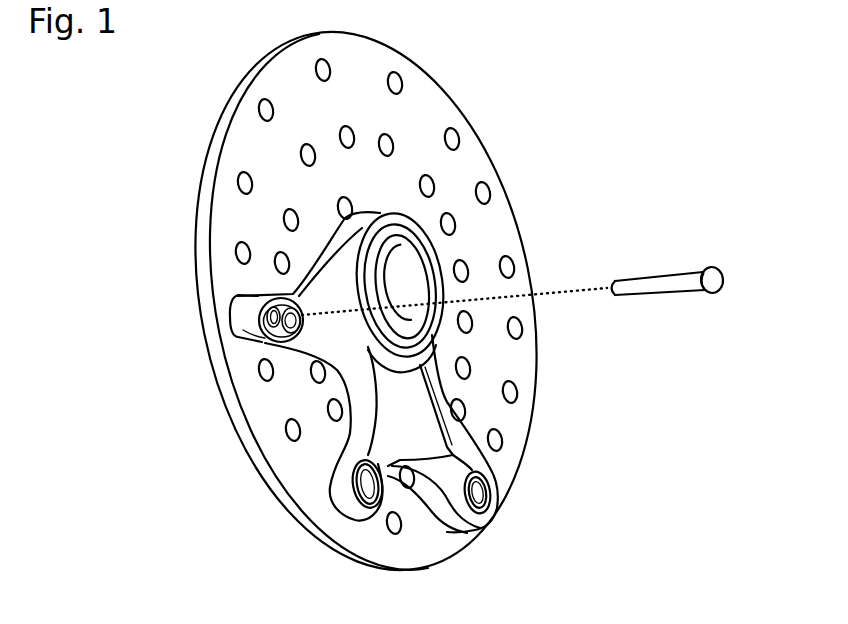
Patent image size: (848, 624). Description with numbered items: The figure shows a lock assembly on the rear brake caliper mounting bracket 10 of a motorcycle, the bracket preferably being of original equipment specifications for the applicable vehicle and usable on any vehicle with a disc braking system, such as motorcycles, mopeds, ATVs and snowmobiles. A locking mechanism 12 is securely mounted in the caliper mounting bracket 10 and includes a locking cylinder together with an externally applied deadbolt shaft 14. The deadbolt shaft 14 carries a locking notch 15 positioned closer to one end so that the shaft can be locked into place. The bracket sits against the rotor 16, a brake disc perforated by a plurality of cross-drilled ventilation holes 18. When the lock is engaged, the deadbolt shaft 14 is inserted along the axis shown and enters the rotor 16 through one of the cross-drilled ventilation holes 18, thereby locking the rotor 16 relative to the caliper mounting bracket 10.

The caliper mounting bracket 10 is at (394, 440).
The locking mechanism 12 is at (278, 332).
The deadbolt shaft 14 is at (657, 287).
The locking notch 15 is at (698, 275).
The rotor 16 is at (366, 114).
The cross-drilled ventilation holes 18 is at (240, 184).